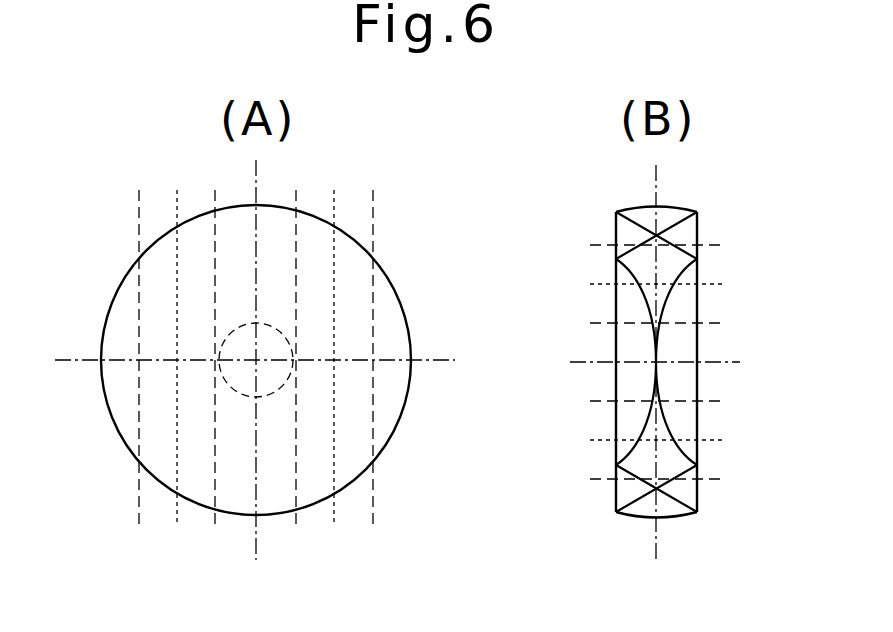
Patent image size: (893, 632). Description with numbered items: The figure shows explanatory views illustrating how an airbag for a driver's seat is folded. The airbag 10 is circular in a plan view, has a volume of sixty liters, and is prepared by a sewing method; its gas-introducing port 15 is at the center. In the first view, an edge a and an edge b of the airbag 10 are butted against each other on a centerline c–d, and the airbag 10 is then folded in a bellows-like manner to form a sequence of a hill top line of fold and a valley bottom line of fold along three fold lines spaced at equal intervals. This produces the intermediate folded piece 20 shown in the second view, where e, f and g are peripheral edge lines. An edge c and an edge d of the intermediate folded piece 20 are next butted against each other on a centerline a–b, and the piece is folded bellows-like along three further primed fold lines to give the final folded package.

The airbag 10 is at (392, 318).
The gas-introducing port 15 is at (297, 380).
The intermediate folded piece 20 is at (632, 388).